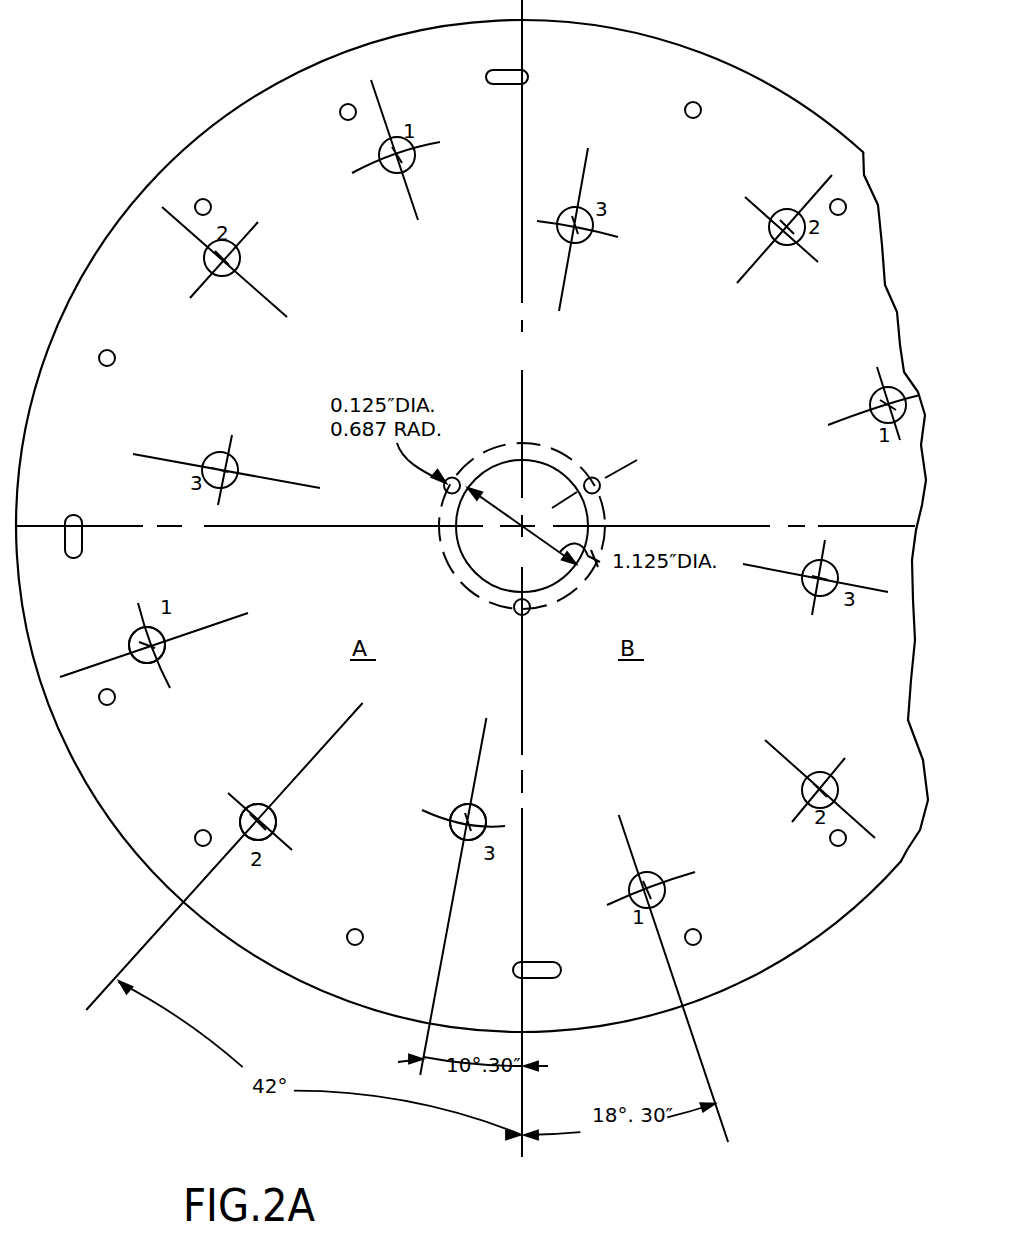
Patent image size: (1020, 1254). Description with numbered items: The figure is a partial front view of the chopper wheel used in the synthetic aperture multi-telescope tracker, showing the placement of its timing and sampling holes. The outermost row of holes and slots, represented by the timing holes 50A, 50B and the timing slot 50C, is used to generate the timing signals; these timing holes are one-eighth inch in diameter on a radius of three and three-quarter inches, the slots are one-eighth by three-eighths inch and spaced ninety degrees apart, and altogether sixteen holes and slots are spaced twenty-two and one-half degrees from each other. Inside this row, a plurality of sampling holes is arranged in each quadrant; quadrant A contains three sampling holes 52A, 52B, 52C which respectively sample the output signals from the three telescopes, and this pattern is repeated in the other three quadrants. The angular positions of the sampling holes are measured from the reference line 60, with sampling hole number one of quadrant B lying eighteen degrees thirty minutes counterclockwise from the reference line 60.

The timing hole 50A is at (208, 201).
The timing hole 50B is at (340, 113).
The timing slot 50C is at (488, 76).
The sampling hole 52A is at (168, 656).
The sampling hole 52B is at (277, 826).
The sampling hole 52C is at (458, 812).
The reference line 60 is at (522, 1152).